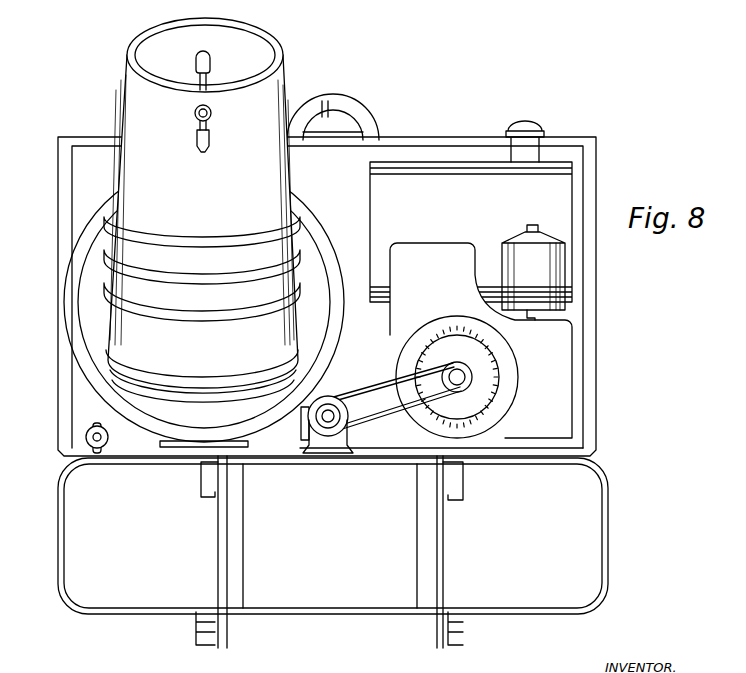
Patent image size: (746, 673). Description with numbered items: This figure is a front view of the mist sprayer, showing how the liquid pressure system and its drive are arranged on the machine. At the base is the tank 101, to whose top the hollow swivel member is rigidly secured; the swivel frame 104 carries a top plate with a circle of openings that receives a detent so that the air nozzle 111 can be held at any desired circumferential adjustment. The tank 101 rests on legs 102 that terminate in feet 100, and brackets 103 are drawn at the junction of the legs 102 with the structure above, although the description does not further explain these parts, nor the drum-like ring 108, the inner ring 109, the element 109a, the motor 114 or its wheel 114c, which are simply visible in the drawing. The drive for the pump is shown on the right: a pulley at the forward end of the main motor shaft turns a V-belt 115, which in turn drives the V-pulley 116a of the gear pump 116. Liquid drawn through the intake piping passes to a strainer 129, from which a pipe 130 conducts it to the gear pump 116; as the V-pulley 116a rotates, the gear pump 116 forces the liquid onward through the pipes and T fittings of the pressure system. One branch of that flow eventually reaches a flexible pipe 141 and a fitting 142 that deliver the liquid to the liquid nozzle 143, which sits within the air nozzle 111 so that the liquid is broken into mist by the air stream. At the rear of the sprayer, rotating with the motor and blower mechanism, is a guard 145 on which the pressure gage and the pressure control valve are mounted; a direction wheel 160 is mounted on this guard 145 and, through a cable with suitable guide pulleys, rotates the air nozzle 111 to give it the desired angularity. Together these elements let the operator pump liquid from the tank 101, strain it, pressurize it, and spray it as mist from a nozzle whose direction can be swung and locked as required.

The feet 100 is at (211, 645).
The tank 101 is at (62, 532).
The legs 102 is at (236, 502).
The brackets 103 is at (209, 469).
The swivel frame 104 is at (388, 452).
The drum ring 108 is at (302, 242).
The inner ring 109 is at (312, 240).
The coil bands 109a is at (326, 398).
The air nozzle 111 is at (284, 72).
The motor 114 is at (558, 358).
The motor wheel 114c is at (472, 386).
The V-belt 115 is at (390, 379).
The gear pump 116 is at (327, 455).
The V-pulley 116a is at (343, 414).
The strainer 129 is at (85, 434).
The pipe 130 is at (248, 450).
The flexible pipe 141 is at (197, 149).
The fitting 142 is at (195, 113).
The liquid nozzle 143 is at (211, 61).
The guard 145 is at (437, 146).
The direction wheel 160 is at (346, 118).